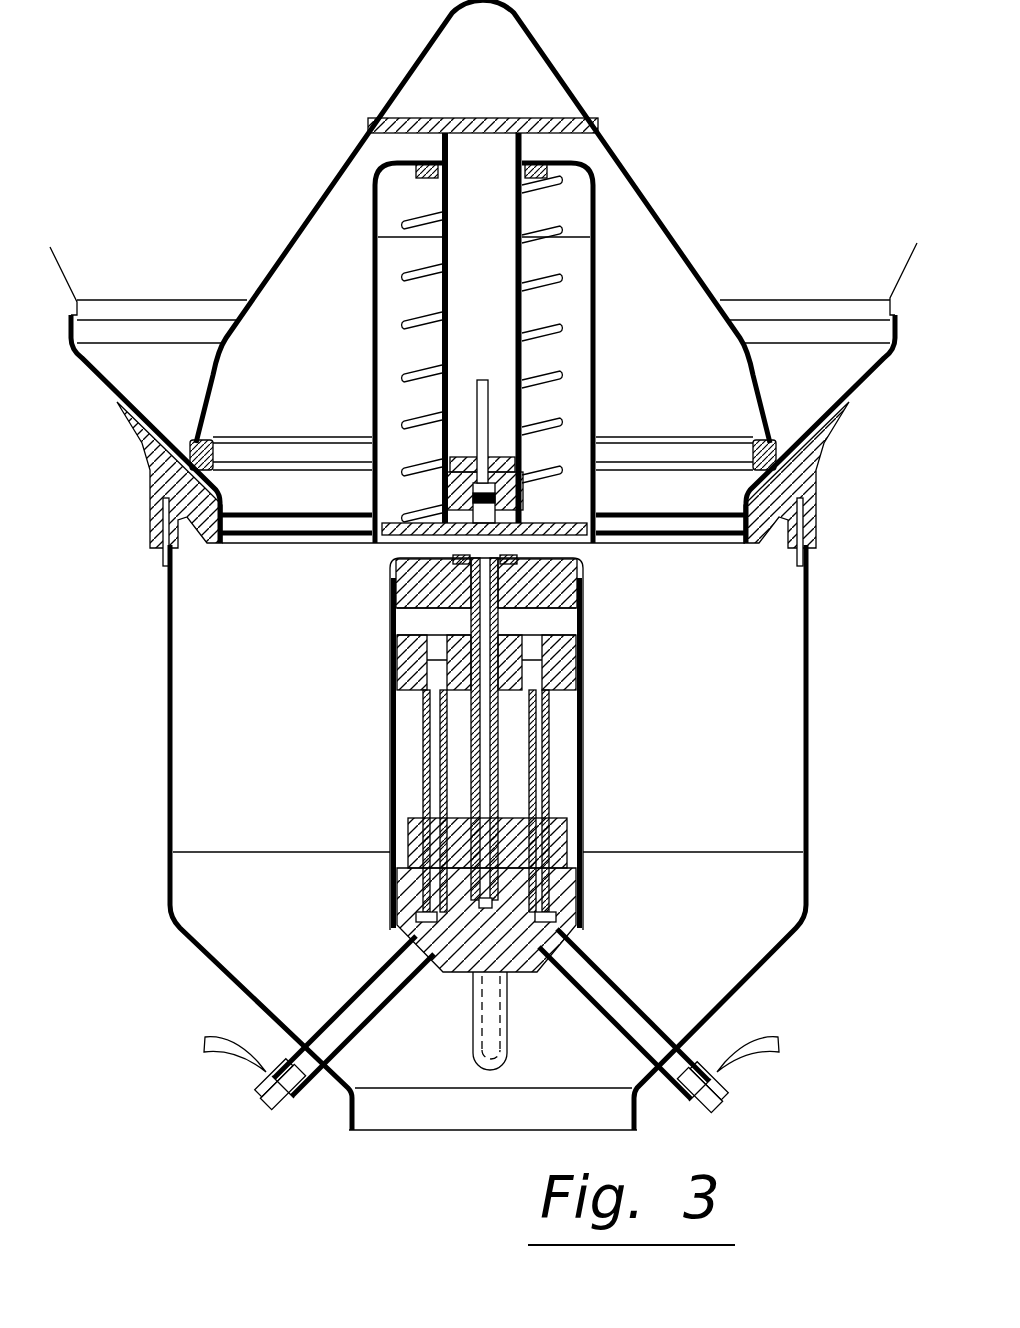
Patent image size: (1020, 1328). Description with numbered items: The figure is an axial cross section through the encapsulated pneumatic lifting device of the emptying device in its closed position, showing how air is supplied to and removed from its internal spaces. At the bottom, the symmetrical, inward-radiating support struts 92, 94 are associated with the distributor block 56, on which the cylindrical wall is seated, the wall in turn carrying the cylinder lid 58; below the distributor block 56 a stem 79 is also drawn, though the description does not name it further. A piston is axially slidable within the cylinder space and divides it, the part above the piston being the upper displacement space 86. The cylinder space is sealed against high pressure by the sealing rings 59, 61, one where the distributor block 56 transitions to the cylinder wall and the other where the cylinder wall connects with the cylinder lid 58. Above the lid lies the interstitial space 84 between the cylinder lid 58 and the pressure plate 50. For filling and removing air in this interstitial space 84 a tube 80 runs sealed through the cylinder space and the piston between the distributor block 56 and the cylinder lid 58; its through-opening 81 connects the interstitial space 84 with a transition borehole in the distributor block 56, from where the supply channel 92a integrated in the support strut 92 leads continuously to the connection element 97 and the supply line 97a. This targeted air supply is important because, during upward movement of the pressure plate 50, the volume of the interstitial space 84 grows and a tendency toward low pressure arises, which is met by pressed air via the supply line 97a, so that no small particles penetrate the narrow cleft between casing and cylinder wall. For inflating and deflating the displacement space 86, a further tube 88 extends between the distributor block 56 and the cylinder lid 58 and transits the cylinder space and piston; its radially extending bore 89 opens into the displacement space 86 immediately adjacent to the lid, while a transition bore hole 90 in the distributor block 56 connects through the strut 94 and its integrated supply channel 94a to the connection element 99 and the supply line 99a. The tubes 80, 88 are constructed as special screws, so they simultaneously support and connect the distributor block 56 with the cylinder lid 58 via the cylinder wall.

The pressure plate 50 is at (575, 572).
The distributor block 56 is at (582, 893).
The cylinder lid 58 is at (578, 650).
The sealing ring 59 is at (393, 690).
The sealing ring 61 is at (397, 877).
The stem 79 is at (585, 960).
The tube 80 is at (548, 728).
The through-opening 81 is at (543, 757).
The interstitial space 84 is at (412, 622).
The upper displacement space 86 is at (408, 772).
The tube 88 is at (425, 805).
The radially extending bore 89 is at (442, 700).
The transition bore hole 90 is at (410, 928).
The support strut 92 is at (640, 1020).
The supply channel 92a is at (618, 990).
The support strut 94 is at (358, 1005).
The supply channel 94a is at (400, 982).
The connection element 97 is at (705, 1095).
The supply line 97a is at (770, 1040).
The connection element 99 is at (280, 1100).
The supply line 99a is at (225, 1035).